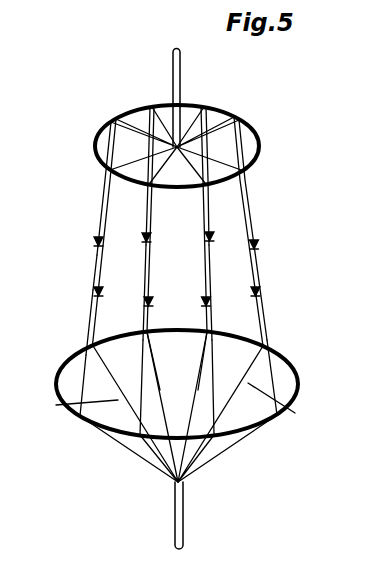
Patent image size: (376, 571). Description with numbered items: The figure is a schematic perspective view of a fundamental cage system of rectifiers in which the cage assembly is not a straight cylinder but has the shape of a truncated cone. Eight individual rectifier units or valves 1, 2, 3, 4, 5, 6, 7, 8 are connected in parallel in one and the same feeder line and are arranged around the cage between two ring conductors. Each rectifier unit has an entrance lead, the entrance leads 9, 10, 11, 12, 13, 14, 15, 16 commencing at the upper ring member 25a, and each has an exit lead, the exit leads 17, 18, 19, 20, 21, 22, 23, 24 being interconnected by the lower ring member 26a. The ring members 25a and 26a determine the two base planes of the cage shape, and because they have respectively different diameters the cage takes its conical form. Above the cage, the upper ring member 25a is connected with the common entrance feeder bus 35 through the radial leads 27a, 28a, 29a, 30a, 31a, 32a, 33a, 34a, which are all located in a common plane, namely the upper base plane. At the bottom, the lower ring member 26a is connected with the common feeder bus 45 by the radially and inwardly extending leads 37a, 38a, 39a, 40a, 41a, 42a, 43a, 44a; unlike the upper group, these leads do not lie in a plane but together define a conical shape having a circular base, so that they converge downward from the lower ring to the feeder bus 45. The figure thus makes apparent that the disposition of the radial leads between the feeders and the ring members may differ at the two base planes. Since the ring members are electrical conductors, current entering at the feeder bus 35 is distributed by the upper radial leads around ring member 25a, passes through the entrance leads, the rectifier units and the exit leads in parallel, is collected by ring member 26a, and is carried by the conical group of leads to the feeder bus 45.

The rectifier unit 1 is at (106, 294).
The rectifier unit 2 is at (154, 303).
The rectifier unit 3 is at (201, 301).
The rectifier unit 4 is at (248, 293).
The rectifier unit 5 is at (261, 244).
The rectifier unit 6 is at (214, 238).
The rectifier unit 7 is at (140, 239).
The rectifier unit 8 is at (90, 241).
The entrance lead 9 is at (96, 263).
The entrance lead 10 is at (150, 268).
The entrance lead 11 is at (205, 268).
The entrance lead 12 is at (253, 270).
The entrance lead 13 is at (250, 217).
The entrance lead 14 is at (209, 212).
The entrance lead 15 is at (147, 213).
The entrance lead 16 is at (102, 212).
The exit lead 17 is at (90, 318).
The exit lead 18 is at (144, 322).
The exit lead 19 is at (206, 322).
The exit lead 20 is at (264, 320).
The exit lead 21 is at (258, 272).
The exit lead 22 is at (210, 258).
The exit lead 23 is at (145, 256).
The exit lead 24 is at (93, 286).
The ring member 25a is at (262, 139).
The ring member 26a is at (289, 352).
The radial lead 27a is at (110, 170).
The radial lead 28a is at (172, 185).
The radial lead 29a is at (216, 176).
The radial lead 30a is at (250, 166).
The radial lead 31a is at (222, 122).
The radial lead 32a is at (187, 106).
The radial lead 33a is at (170, 104).
The radial lead 34a is at (150, 123).
The entrance feeder bus 35 is at (173, 53).
The radial lead 37a is at (108, 437).
The radial lead 38a is at (147, 451).
The radial lead 39a is at (188, 472).
The radial lead 40a is at (222, 450).
The radial lead 41a is at (296, 413).
The radial lead 42a is at (206, 380).
The radial lead 43a is at (150, 380).
The radial lead 44a is at (57, 405).
The feeder bus 45 is at (176, 512).